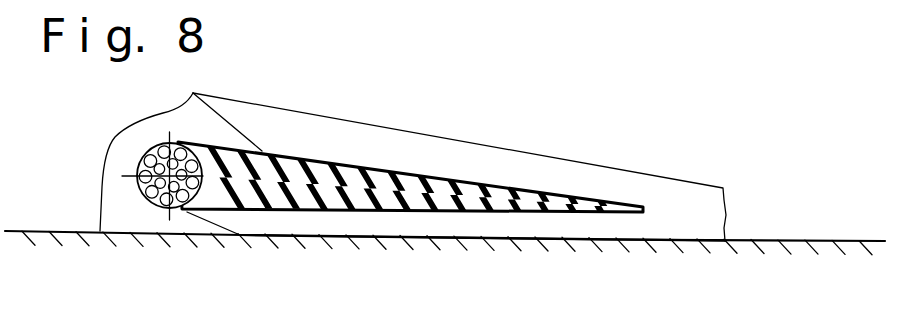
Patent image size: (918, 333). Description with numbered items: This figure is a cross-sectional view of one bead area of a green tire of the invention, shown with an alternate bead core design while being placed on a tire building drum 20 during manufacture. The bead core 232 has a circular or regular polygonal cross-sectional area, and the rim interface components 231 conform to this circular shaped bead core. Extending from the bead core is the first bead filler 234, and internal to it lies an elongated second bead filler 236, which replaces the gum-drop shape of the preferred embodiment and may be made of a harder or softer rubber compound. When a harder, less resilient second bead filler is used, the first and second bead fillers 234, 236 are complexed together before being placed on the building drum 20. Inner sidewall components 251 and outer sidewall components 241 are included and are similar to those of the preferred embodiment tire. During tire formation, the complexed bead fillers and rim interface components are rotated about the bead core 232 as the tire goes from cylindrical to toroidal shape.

The building drum 20 is at (840, 240).
The rim interface components 231 is at (125, 207).
The bead core 232 is at (160, 207).
The first bead filler 234 is at (430, 192).
The second bead filler 236 is at (285, 183).
The outer sidewall components 241 is at (520, 149).
The inner sidewall components 251 is at (522, 242).